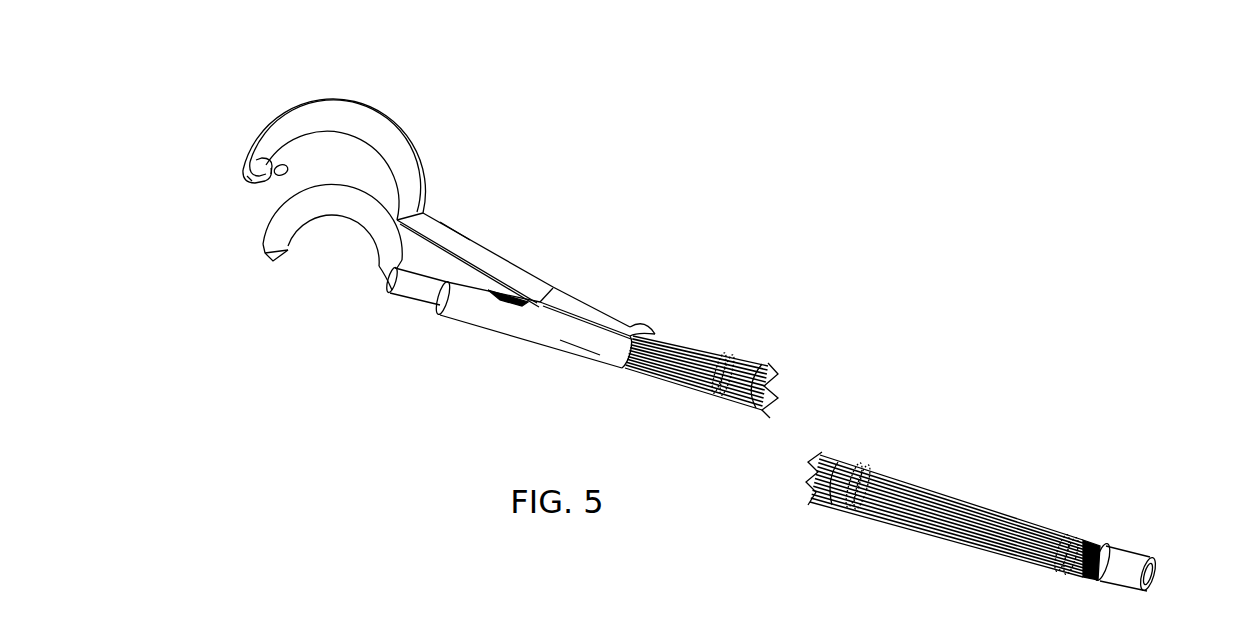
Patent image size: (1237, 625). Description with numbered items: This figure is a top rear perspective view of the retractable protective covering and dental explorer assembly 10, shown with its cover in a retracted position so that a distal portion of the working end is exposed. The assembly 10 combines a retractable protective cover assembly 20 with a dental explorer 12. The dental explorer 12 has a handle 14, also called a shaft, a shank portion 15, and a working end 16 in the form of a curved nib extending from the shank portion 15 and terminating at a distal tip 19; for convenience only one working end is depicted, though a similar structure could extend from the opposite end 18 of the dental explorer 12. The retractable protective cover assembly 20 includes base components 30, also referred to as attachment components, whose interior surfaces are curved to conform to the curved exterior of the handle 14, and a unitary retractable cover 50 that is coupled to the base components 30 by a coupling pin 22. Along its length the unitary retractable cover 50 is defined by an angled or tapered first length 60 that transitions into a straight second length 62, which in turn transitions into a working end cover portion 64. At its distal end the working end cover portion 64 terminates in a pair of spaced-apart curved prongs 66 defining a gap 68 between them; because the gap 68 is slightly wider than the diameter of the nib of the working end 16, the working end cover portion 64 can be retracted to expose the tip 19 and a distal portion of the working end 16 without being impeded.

The retractable protective covering and dental explorer assembly 10 is at (740, 271).
The dental explorer 12 is at (737, 346).
The handle 14 is at (909, 484).
The shank portion 15 is at (386, 292).
The working end 16 is at (324, 256).
The opposite end 18 is at (1151, 553).
The distal tip 19 is at (272, 264).
The retractable protective cover assembly 20 is at (566, 249).
The coupling pin 22 is at (543, 311).
The base components 30 is at (579, 348).
The unitary retractable cover 50 is at (471, 238).
The first length 60 is at (601, 308).
The second length 62 is at (498, 257).
The working end cover portion 64 is at (362, 118).
The curved prongs 66 is at (287, 158).
The gap 68 is at (271, 188).